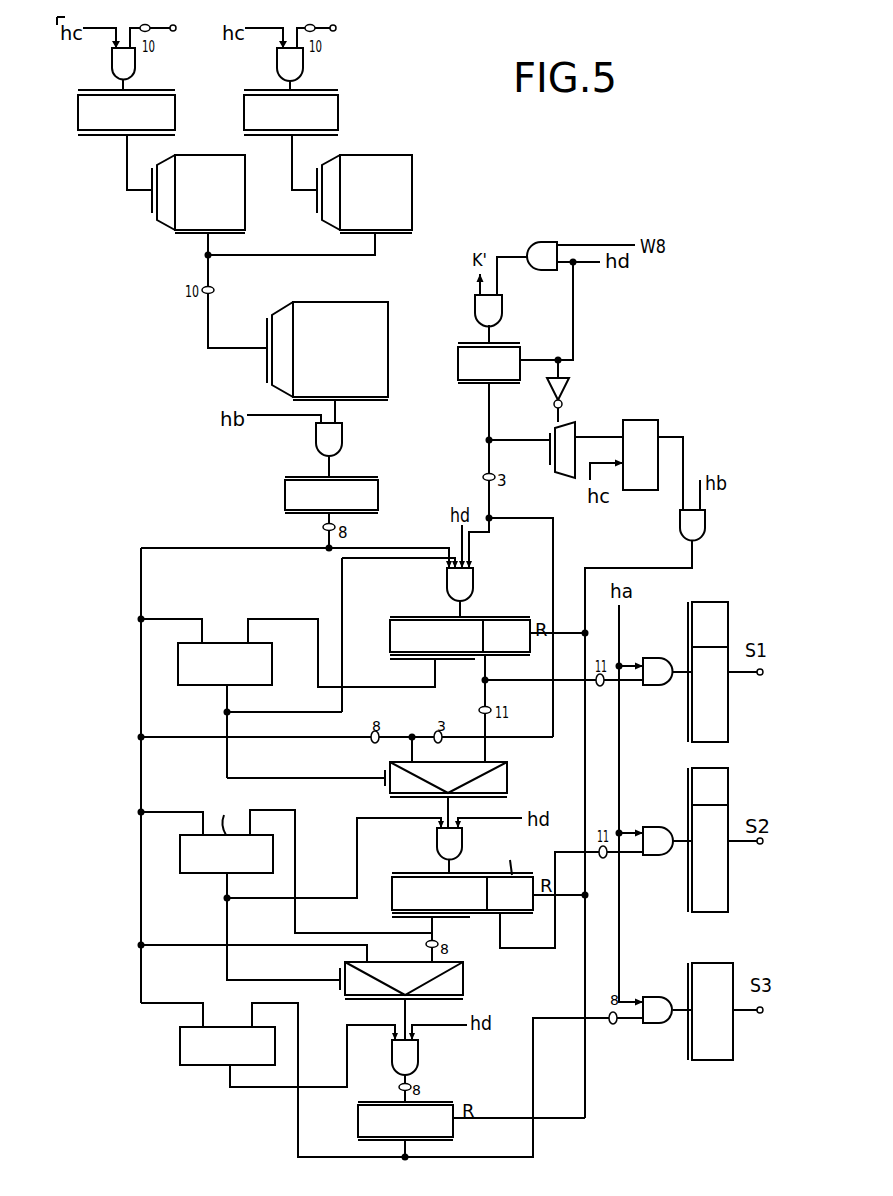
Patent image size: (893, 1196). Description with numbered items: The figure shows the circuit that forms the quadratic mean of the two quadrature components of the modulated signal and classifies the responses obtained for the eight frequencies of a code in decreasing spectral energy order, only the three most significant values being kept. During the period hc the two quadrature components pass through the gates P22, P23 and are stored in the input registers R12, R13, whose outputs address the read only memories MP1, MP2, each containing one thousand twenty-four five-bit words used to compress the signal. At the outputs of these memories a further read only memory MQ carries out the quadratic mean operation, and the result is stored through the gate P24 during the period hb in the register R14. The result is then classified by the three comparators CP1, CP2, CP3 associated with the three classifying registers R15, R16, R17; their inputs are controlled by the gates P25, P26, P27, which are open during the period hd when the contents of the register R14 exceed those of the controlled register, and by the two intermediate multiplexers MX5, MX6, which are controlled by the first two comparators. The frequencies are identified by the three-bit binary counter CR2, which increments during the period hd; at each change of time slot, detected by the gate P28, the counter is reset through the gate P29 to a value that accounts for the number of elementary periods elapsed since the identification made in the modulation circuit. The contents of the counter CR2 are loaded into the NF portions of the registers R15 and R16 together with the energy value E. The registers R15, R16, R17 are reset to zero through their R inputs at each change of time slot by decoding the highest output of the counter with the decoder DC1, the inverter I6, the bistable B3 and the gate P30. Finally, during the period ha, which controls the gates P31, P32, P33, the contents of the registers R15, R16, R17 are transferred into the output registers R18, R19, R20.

The gate P22 is at (136, 66).
The gate P23 is at (304, 66).
The input register R12 is at (170, 115).
The input register R13 is at (338, 115).
The read only memory MP1 is at (185, 215).
The read only memory MP2 is at (395, 208).
The read only memory MQ is at (375, 343).
The gate P24 is at (342, 445).
The register R14 is at (305, 500).
The gate P28 is at (566, 218).
The gate P29 is at (500, 313).
The 3-bit binary counter CR2 is at (478, 375).
The inverter I6 is at (568, 392).
The decoder DC1 is at (540, 497).
The bistable B3 is at (652, 428).
The gate P30 is at (682, 530).
The gate P25 is at (473, 585).
The classifying register R15 is at (398, 625).
The comparator CP1 is at (262, 685).
The intermediate multiplexer MX5 is at (500, 788).
The gate P31 is at (660, 680).
The output register R18 is at (715, 610).
The gate P26 is at (440, 842).
The classifying register R16 is at (400, 893).
The comparator CP2 is at (222, 873).
The intermediate multiplexer MX6 is at (458, 972).
The gate P32 is at (660, 848).
The output register R19 is at (706, 890).
The comparator CP3 is at (208, 1065).
The gate P27 is at (418, 1068).
The classifying register R17 is at (375, 1113).
The gate P33 is at (660, 1000).
The output register R20 is at (712, 1043).